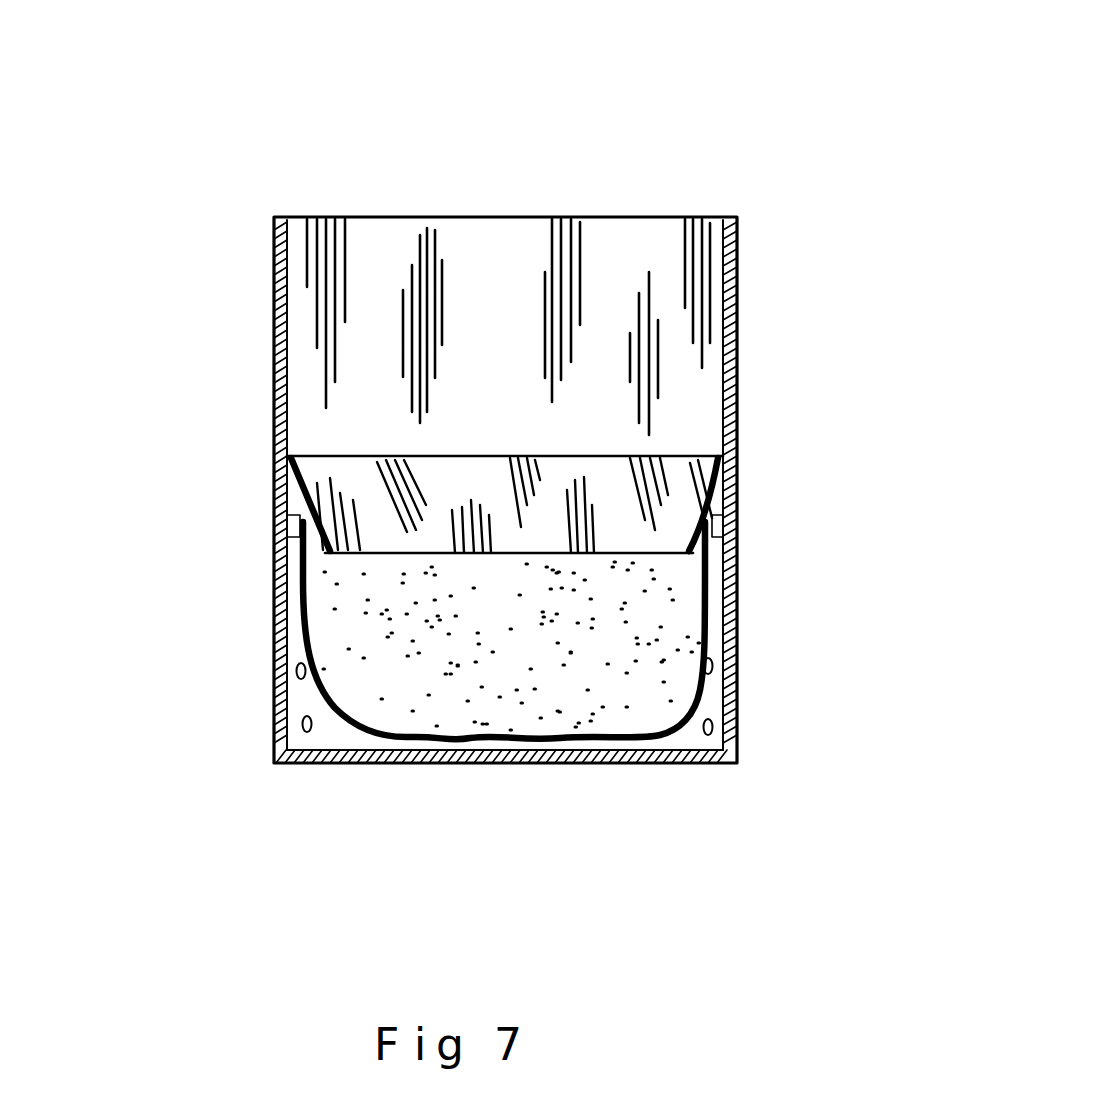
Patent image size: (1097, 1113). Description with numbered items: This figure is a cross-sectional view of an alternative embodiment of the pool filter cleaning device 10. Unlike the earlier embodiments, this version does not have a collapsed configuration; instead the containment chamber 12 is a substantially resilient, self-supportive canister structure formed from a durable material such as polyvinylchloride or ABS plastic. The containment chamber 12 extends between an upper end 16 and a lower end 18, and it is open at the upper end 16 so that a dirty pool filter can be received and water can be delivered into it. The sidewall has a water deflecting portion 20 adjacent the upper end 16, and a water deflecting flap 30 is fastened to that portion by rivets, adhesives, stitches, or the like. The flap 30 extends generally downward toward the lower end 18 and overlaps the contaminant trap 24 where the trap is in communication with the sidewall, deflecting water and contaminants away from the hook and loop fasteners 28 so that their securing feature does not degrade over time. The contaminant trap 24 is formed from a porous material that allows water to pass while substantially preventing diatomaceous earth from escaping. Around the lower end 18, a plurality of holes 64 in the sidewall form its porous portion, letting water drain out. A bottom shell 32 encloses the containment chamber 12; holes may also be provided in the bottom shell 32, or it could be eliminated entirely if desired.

The pool filter cleaning device 10 is at (736, 120).
The containment chamber 12 is at (274, 365).
The upper end 16 is at (440, 195).
The lower end 18 is at (352, 812).
The water deflecting portion 20 is at (500, 401).
The contaminant trap 24 is at (625, 677).
The hook and loop fasteners 28 is at (275, 505).
The water deflecting flap 30 is at (677, 483).
The bottom shell 32 is at (471, 764).
The holes 64 is at (275, 670).